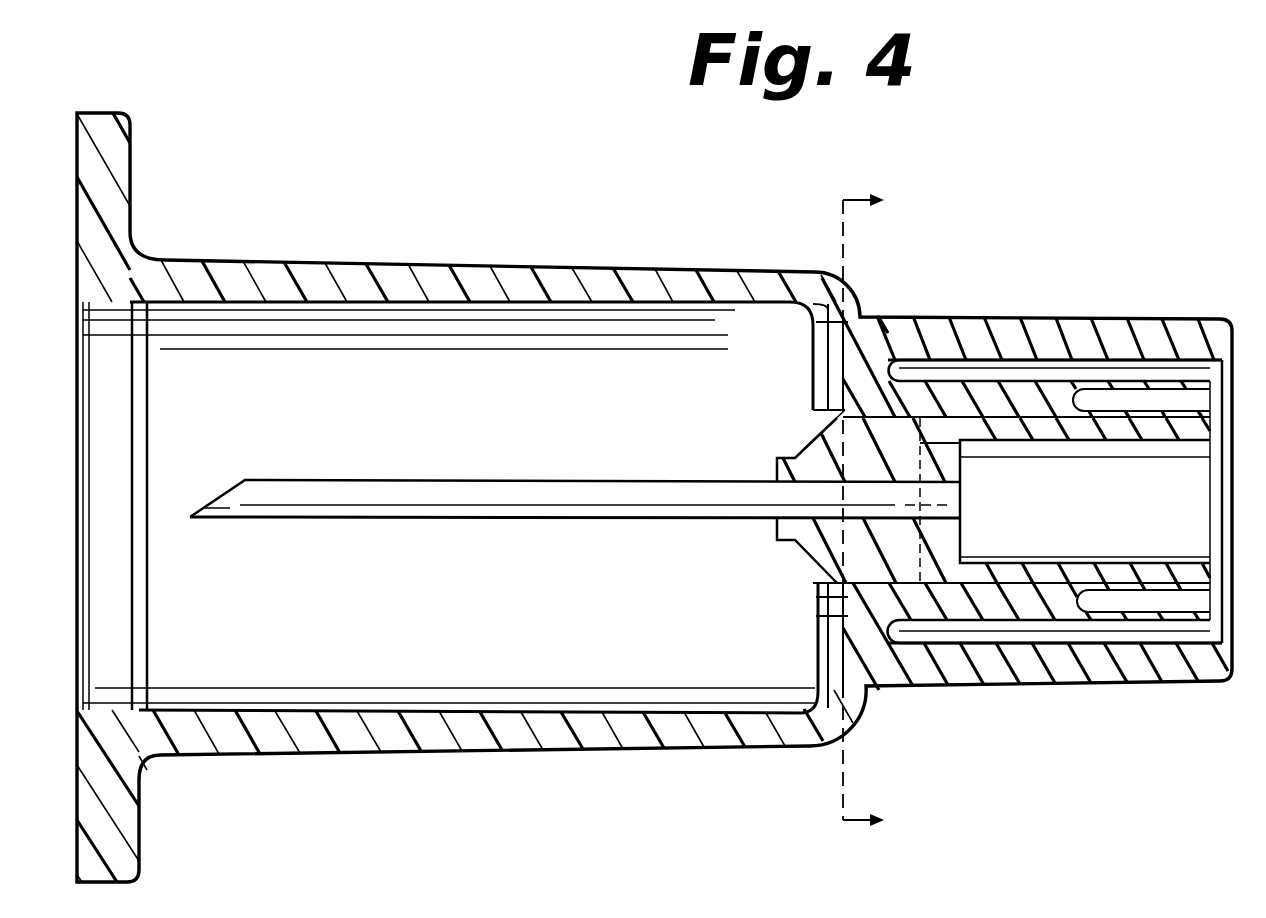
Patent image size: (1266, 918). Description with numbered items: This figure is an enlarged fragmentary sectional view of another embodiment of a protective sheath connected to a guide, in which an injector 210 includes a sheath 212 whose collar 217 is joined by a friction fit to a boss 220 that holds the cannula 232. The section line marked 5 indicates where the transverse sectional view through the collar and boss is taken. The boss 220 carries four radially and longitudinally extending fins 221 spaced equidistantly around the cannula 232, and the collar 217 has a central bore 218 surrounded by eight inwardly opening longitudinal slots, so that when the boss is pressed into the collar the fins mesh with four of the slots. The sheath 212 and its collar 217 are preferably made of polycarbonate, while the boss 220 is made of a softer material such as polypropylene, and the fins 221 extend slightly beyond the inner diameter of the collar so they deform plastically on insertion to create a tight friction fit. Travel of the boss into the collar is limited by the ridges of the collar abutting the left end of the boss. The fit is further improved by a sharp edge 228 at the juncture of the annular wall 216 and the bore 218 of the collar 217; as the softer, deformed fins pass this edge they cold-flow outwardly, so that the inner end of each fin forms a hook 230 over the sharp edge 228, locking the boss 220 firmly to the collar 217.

The injector 210 is at (806, 752).
The sheath 212 is at (510, 752).
The annular wall 216 is at (828, 622).
The collar 217 is at (985, 380).
The central bore 218 is at (813, 386).
The boss 220 is at (805, 560).
The fins 221 is at (795, 448).
The sharp edge 228 is at (826, 616).
The hook 230 is at (824, 322).
The cannula 232 is at (360, 478).
The section line 5- 5 is at (874, 515).